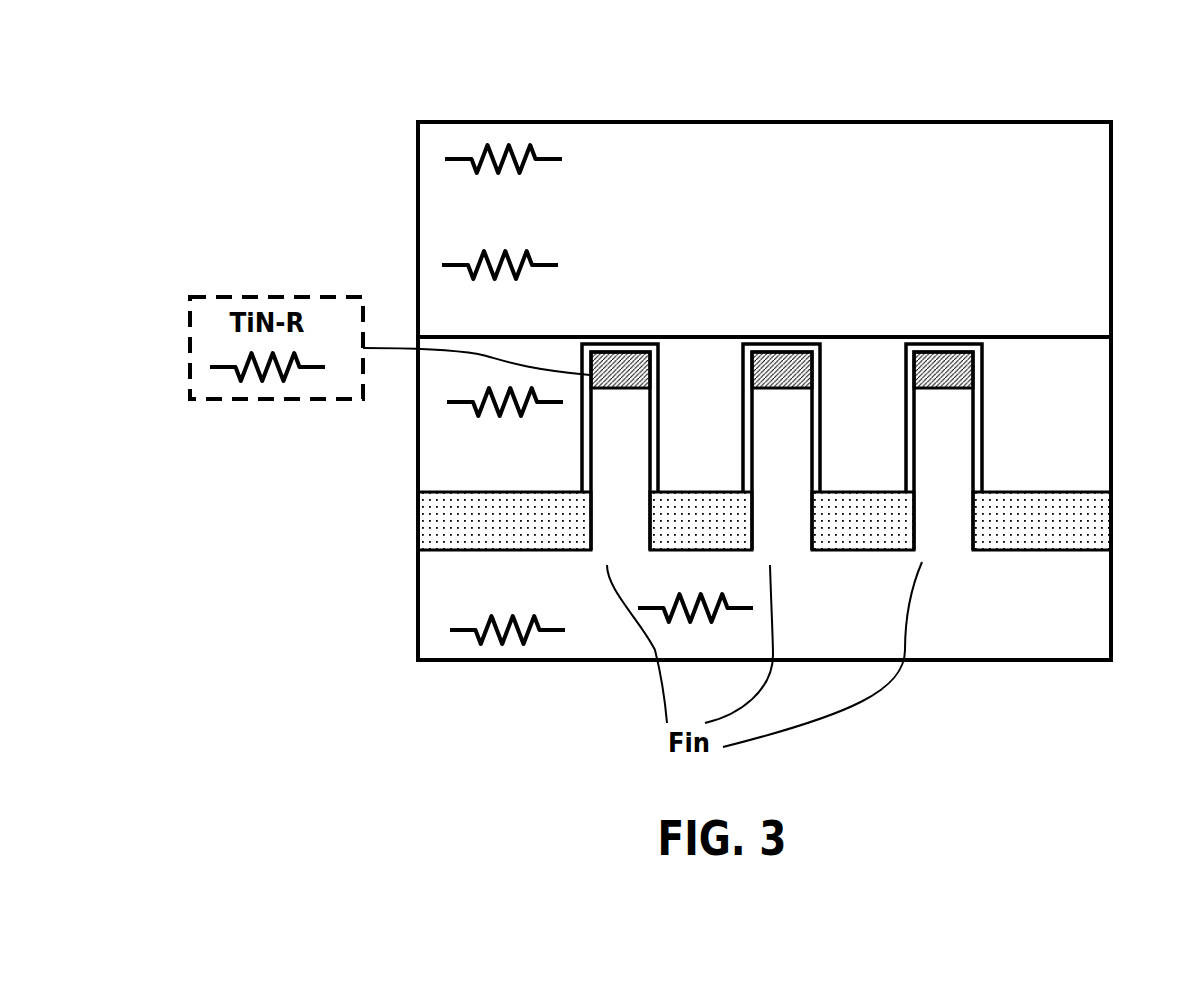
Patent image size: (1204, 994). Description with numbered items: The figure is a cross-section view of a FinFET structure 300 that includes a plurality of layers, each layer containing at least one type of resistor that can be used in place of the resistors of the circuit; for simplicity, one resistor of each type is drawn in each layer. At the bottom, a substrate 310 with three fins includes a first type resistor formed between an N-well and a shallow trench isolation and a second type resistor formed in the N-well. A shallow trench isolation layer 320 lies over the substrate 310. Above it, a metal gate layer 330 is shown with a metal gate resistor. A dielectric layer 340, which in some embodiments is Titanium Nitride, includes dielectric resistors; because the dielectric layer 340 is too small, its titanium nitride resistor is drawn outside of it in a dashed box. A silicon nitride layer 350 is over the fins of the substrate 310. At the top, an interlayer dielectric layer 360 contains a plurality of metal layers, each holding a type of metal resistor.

The FinFET structure 300 is at (1084, 112).
The substrate 310 is at (1090, 615).
The shallow trench isolation layer 320 is at (1090, 531).
The metal gate layer 330 is at (1080, 420).
The dielectric layer 340 is at (982, 428).
The silicon nitride layer 350 is at (943, 370).
The interlayer dielectric layer 360 is at (1092, 229).